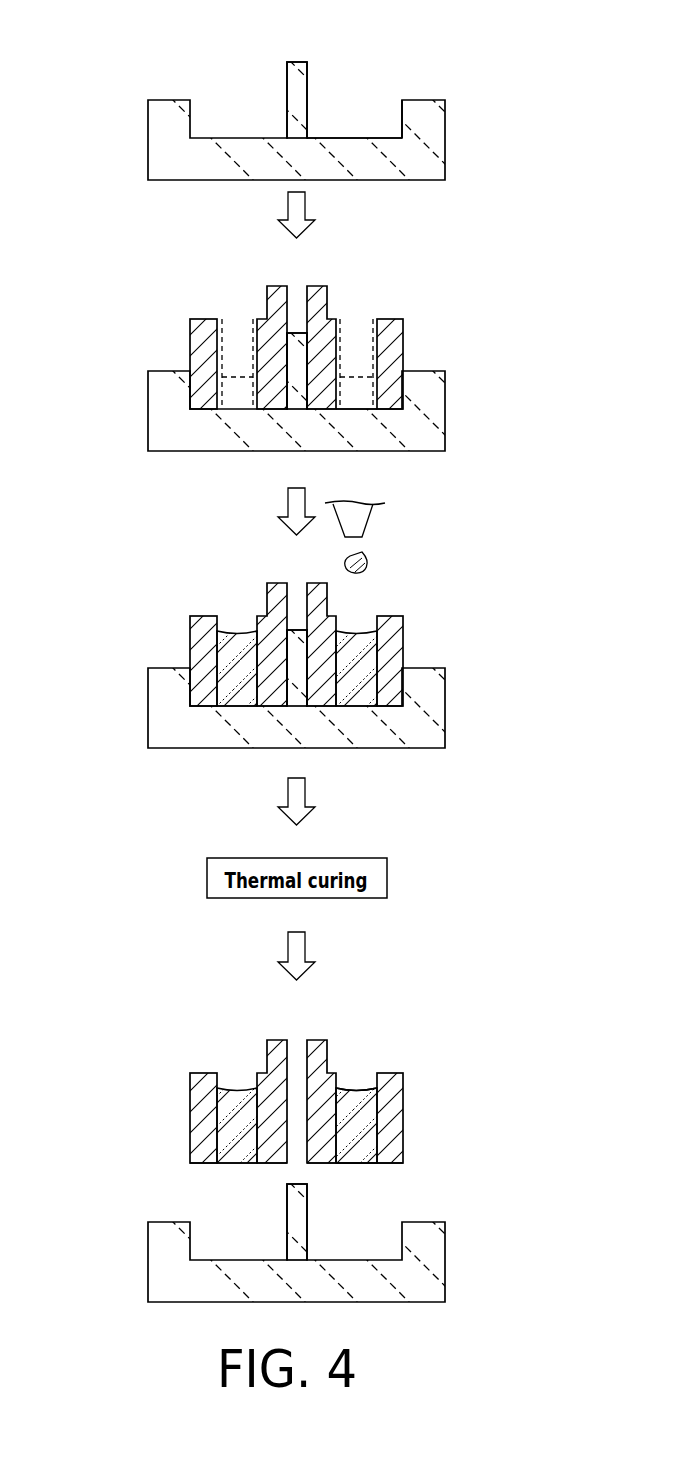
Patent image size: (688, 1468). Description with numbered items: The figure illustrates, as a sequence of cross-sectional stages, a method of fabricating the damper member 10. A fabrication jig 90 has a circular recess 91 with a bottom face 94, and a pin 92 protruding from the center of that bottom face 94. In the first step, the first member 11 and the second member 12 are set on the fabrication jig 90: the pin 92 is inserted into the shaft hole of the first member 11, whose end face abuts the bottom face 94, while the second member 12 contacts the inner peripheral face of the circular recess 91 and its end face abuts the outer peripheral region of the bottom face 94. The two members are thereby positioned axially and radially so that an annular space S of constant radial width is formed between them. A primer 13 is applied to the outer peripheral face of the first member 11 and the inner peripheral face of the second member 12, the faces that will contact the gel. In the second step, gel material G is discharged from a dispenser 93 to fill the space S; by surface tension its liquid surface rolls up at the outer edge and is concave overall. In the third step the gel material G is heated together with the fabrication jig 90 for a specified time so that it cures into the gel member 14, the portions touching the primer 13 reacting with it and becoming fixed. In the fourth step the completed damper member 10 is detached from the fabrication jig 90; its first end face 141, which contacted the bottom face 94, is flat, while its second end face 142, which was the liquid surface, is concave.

The fabrication jig 90 is at (125, 150).
The pin 92 is at (297, 62).
The bottom face 94 is at (348, 138).
The circular recess 91 is at (397, 110).
The second member 12 is at (208, 318).
The first member 11 is at (270, 302).
The primer 13 is at (227, 319).
The space S is at (297, 364).
The gel material G is at (233, 640).
The dispenser 93 is at (362, 522).
The damper member 10 is at (418, 1102).
The gel member 14 is at (352, 1097).
The second end face 142 is at (360, 1087).
The first end face 141 is at (357, 1163).